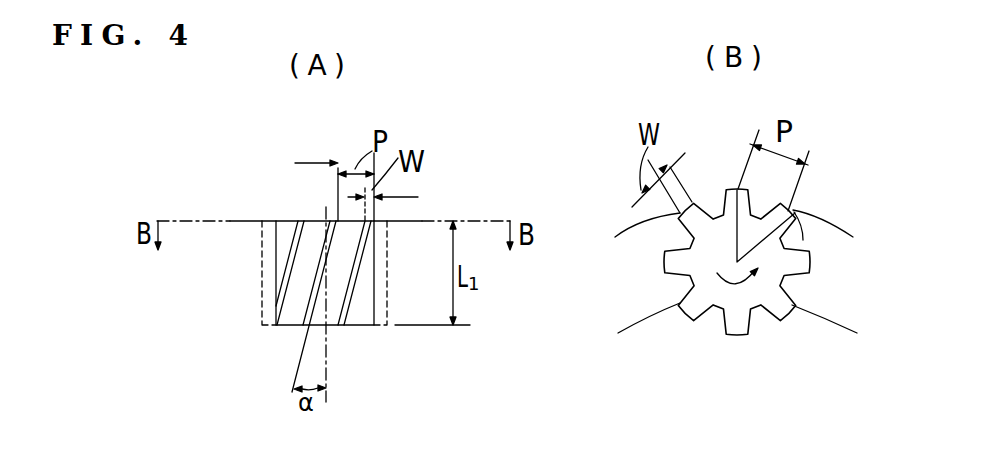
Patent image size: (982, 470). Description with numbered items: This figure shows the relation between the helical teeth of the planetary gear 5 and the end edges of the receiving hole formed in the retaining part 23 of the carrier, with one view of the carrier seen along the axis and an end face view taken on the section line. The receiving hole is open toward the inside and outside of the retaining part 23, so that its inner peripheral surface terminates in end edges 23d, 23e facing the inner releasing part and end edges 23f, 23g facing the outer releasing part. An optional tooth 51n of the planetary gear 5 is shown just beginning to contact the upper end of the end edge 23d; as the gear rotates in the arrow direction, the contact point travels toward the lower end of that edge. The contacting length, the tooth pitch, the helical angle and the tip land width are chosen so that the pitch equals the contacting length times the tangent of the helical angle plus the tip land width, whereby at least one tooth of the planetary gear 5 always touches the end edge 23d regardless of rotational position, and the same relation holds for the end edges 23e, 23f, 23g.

The retaining part 23 is at (248, 238).
The end edge 23d is at (373, 279).
The end edge 23e is at (279, 238).
The end edge 23f is at (793, 212).
The end edge 23g is at (692, 203).
The planetary gear 5 is at (312, 250).
The tooth 51n is at (350, 305).